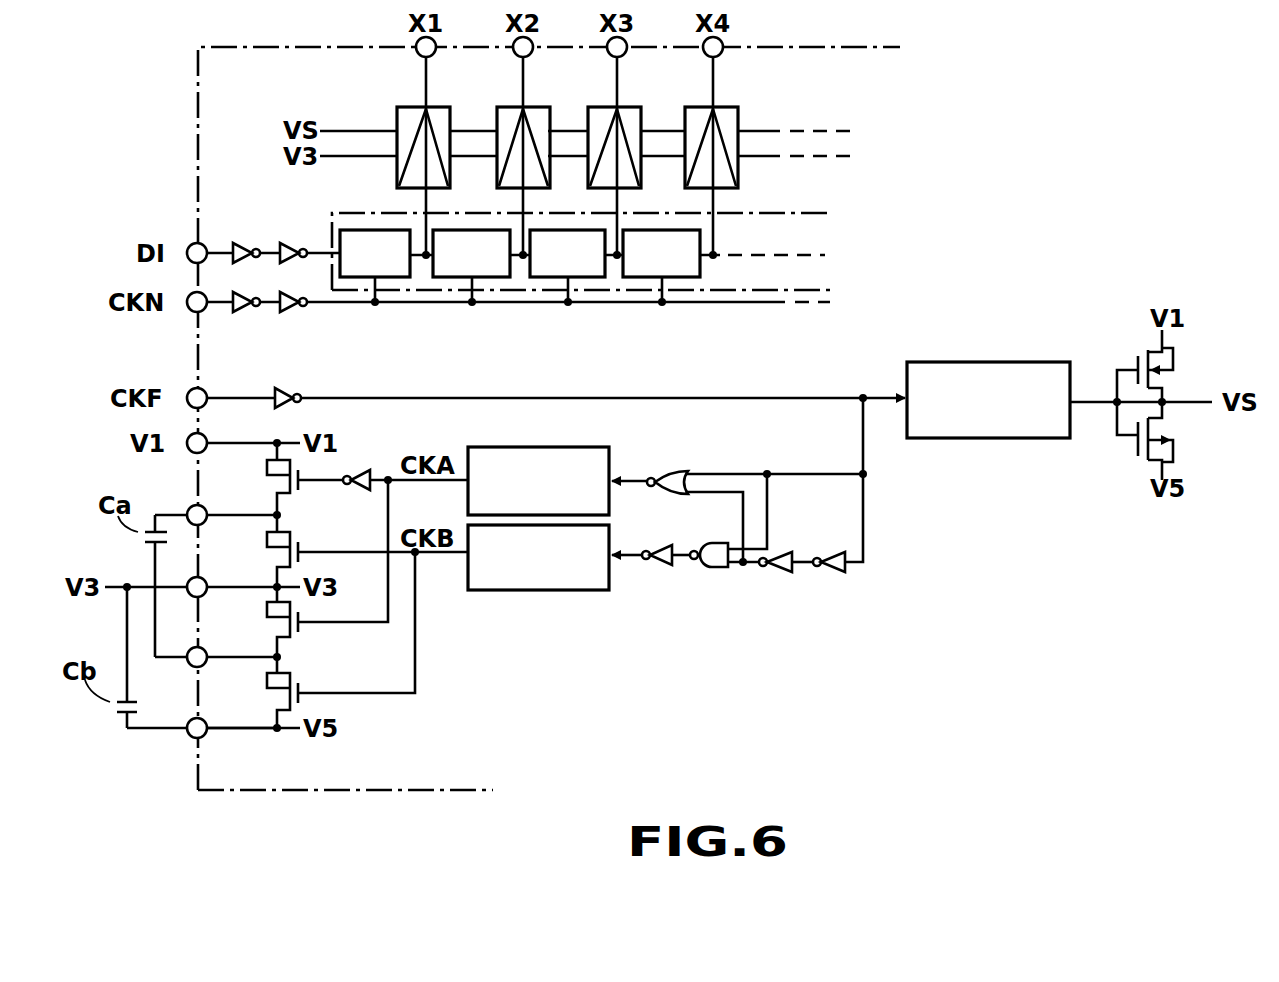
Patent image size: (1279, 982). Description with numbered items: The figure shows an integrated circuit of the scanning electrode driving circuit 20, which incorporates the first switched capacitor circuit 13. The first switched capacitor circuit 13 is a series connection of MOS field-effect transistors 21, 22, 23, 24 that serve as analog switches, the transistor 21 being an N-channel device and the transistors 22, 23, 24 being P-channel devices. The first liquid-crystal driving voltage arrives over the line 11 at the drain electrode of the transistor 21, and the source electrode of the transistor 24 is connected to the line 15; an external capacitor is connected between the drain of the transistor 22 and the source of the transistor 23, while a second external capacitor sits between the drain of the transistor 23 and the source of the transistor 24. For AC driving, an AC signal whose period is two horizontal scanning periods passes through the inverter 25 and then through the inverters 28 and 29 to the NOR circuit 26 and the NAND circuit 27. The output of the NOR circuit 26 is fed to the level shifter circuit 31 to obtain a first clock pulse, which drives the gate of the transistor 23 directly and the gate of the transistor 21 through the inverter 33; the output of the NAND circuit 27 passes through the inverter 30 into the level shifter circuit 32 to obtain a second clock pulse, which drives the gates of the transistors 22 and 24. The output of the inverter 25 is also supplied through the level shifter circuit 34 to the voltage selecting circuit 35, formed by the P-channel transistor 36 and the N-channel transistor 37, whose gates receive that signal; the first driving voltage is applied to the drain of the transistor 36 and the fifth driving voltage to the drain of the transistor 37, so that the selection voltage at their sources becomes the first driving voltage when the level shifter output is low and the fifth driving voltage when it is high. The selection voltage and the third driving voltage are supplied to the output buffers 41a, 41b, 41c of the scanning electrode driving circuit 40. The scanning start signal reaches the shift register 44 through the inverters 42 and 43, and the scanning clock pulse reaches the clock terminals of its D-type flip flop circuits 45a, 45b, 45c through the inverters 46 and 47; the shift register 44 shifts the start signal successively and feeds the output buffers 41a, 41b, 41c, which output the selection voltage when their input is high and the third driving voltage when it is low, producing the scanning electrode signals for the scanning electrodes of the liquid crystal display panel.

The scanning electrode driving circuit 20 is at (198, 122).
The scanning electrode driving circuit 40 is at (274, 76).
The output buffer 41a is at (397, 115).
The output buffer 41b is at (497, 115).
The output buffer 41c is at (588, 115).
The inverter 42 is at (242, 244).
The inverter 43 is at (290, 244).
The shift register 44 is at (623, 292).
The flip flop circuit 45a is at (375, 280).
The flip flop circuit 45b is at (448, 280).
The flip flop circuit 45c is at (545, 280).
The inverter 46 is at (243, 311).
The inverter 47 is at (291, 311).
The inverter 25 is at (290, 389).
The line 11 is at (236, 443).
The first switched capacitor circuit 13 is at (382, 714).
The line 15 is at (237, 734).
The MOS field-effect transistor 21 is at (303, 488).
The MOS field-effect transistor 22 is at (305, 553).
The MOS field-effect transistor 23 is at (305, 621).
The MOS field-effect transistor 24 is at (300, 683).
The inverter 33 is at (364, 468).
The level shifter circuit 31 is at (550, 447).
The level shifter circuit 32 is at (541, 590).
The NOR circuit 26 is at (672, 470).
The NAND circuit 27 is at (716, 568).
The inverter 28 is at (838, 574).
The inverter 29 is at (782, 574).
The inverter 30 is at (656, 567).
The level shifter circuit 34 is at (996, 362).
The voltage selecting circuit 35 is at (1166, 392).
The P-channel MOS field effect transistor 36 is at (1135, 352).
The N-channel MOS field effect transistor 37 is at (1132, 448).